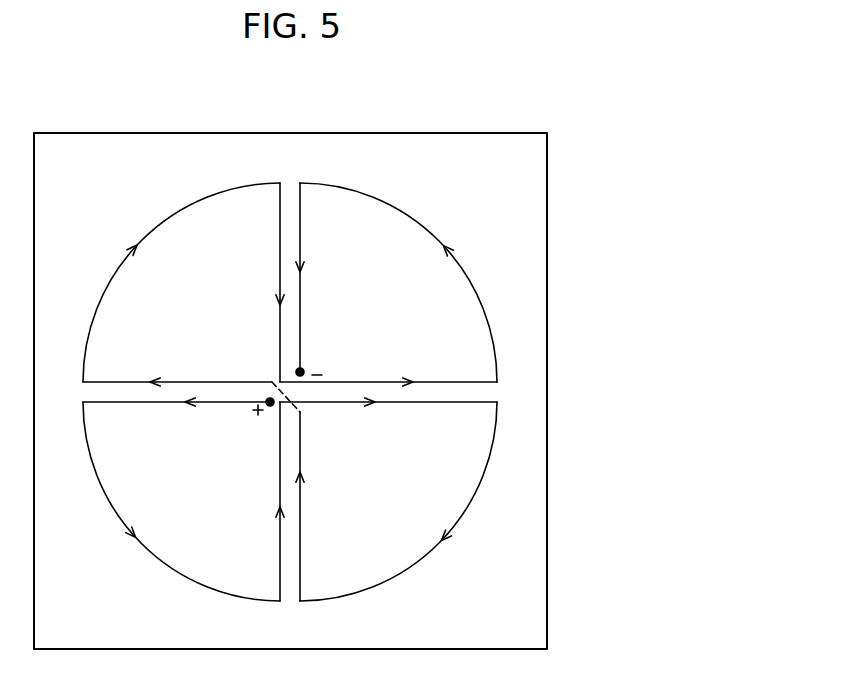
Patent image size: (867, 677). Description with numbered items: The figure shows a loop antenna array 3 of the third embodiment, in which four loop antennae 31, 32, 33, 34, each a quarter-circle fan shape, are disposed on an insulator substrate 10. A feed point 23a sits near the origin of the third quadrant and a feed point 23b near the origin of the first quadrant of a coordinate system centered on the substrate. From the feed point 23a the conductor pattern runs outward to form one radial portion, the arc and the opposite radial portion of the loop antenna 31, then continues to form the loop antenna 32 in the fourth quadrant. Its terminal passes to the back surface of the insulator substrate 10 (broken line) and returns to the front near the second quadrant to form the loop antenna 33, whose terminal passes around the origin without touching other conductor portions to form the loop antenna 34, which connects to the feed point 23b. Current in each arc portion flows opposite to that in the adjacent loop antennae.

The loop antenna array 3 is at (347, 118).
The insulator substrate 10 is at (338, 391).
The feed point 23a is at (267, 406).
The feed point 23b is at (354, 354).
The loop antenna 31 is at (183, 499).
The loop antenna 32 is at (388, 499).
The loop antenna 33 is at (183, 284).
The loop antenna 34 is at (388, 284).